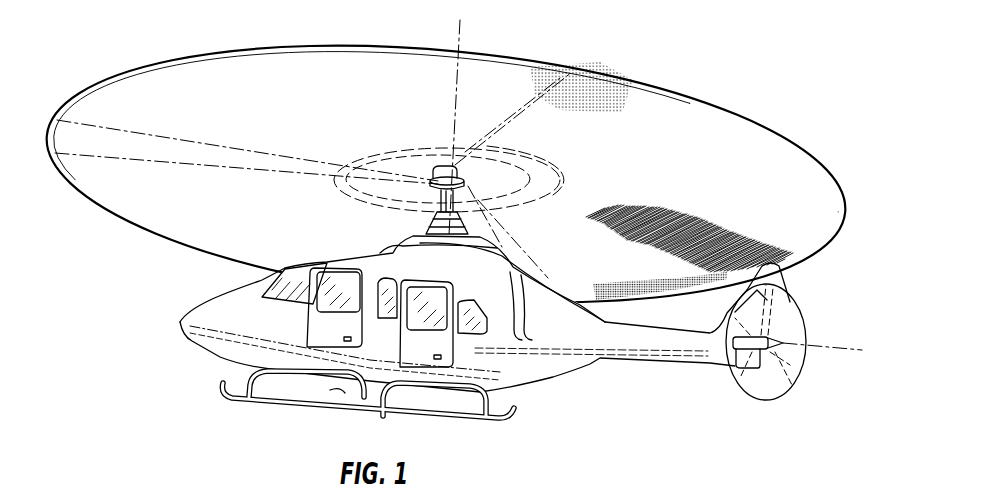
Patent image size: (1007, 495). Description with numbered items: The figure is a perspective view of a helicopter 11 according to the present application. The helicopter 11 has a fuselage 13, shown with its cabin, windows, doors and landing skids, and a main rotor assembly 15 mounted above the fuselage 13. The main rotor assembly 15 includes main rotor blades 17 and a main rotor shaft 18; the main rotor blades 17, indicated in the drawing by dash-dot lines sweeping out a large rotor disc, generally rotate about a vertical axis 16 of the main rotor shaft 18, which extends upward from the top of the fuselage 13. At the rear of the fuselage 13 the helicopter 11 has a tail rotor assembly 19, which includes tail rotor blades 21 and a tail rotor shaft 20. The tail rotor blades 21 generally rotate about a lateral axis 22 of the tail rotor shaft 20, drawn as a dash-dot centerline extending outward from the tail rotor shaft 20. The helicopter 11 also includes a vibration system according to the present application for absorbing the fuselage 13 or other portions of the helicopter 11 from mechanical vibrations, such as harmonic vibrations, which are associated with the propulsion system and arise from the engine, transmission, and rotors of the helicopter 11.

The helicopter 11 is at (636, 50).
The fuselage 13 is at (228, 350).
The main rotor assembly 15 is at (511, 225).
The vertical axis 16 is at (450, 113).
The main rotor blades 17 is at (201, 143).
The main rotor shaft 18 is at (430, 198).
The tail rotor assembly 19 is at (778, 418).
The tail rotor shaft 20 is at (746, 352).
The tail rotor blades 21 is at (787, 312).
The lateral axis 22 is at (823, 350).